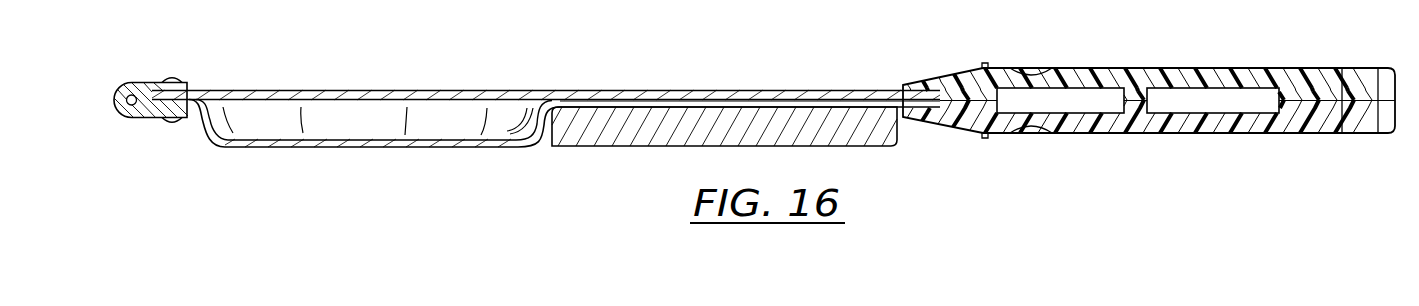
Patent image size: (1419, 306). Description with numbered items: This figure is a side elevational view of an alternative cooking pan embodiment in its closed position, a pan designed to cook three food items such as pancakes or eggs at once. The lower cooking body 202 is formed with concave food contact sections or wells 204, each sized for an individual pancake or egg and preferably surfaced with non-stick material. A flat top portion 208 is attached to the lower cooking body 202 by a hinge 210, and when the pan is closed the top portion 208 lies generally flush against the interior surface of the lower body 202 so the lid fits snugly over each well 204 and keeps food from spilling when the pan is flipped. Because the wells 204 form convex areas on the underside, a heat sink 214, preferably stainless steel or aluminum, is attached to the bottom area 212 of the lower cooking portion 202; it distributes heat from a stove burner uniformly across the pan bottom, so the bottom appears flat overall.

The lower cooking body 202 is at (205, 135).
The concave food contact section 204 is at (302, 137).
The flat top portion 208 is at (410, 90).
The hinge 210 is at (130, 98).
The bottom area 212 is at (845, 112).
The heat sink 214 is at (605, 138).